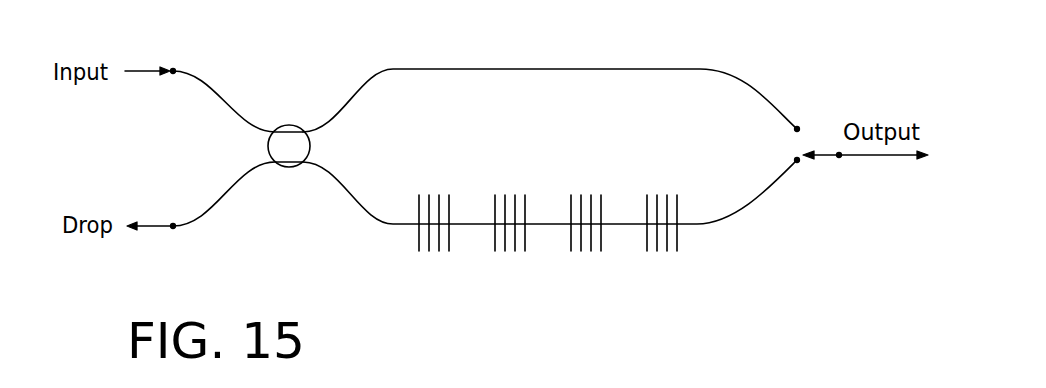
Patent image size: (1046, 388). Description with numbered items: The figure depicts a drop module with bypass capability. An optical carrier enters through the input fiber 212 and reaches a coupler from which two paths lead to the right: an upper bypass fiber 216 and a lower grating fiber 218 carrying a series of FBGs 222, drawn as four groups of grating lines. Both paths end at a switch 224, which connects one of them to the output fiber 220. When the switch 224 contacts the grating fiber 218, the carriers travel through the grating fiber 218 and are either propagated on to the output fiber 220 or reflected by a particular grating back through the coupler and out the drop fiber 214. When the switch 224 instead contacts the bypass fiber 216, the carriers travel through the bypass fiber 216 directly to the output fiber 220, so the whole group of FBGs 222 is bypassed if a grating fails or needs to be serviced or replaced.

The input fiber 212 is at (225, 95).
The drop fiber 214 is at (222, 203).
The bypass fiber 216 is at (558, 69).
The grating fiber 218 is at (747, 203).
The output fiber 220 is at (870, 156).
The FBGs 222 is at (435, 252).
The switch 224 is at (827, 151).